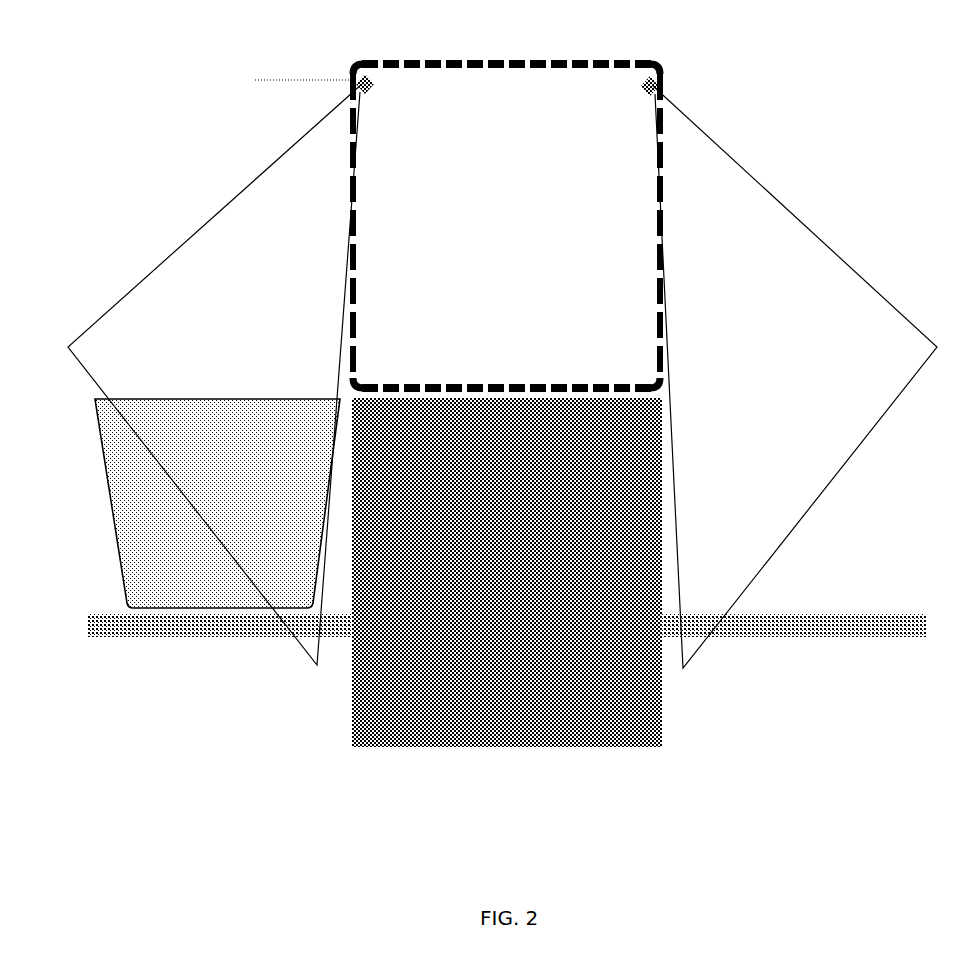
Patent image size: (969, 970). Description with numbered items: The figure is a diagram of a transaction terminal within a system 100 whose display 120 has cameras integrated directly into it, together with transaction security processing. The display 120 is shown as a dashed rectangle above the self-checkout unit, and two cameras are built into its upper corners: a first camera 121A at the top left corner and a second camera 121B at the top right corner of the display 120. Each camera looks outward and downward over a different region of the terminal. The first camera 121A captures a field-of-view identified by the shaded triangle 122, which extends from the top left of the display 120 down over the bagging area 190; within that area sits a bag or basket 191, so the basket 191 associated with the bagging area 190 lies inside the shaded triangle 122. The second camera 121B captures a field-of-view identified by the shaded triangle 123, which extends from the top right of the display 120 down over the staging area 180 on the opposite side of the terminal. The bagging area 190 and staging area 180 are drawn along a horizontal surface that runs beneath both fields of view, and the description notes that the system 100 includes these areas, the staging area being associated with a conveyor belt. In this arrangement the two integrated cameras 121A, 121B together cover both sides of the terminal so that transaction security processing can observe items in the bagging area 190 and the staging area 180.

The system 100 is at (479, 383).
The display 120 is at (506, 226).
The first camera 121A is at (360, 72).
The second camera 121B is at (642, 80).
The shaded triangle 122 is at (211, 272).
The shaded triangle 123 is at (792, 273).
The staging area 180 is at (877, 636).
The bagging area 190 is at (175, 637).
The basket 191 is at (110, 500).